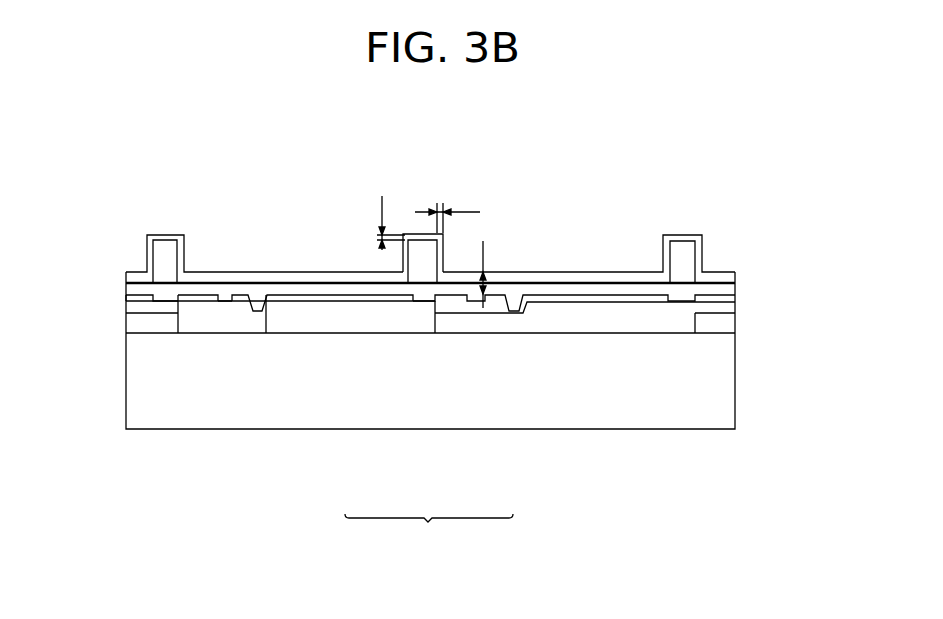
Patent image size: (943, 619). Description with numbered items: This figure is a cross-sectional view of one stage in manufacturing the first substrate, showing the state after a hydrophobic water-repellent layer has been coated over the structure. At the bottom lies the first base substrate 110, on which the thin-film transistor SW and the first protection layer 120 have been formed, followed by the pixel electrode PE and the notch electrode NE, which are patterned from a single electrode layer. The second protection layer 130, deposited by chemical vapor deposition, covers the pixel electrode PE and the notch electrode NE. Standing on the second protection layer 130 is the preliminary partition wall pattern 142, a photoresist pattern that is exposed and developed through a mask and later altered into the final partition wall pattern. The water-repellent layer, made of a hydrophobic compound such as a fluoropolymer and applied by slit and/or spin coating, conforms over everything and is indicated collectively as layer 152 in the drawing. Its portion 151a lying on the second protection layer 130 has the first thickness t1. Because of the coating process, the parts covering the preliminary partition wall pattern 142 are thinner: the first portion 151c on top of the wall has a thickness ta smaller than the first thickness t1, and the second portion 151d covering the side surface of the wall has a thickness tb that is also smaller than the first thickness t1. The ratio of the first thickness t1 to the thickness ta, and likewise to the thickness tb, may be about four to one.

The first base substrate 110 is at (127, 377).
The first protection layer 120 is at (127, 322).
The second protection layer 130 is at (127, 291).
The preliminary partition wall pattern 142 is at (163, 253).
The notch electrode NE is at (185, 297).
The thin-film transistor SW is at (231, 325).
The pixel electrode PE is at (283, 298).
The portion of the water-repellent layer 151a is at (361, 272).
The first portion of the water-repellent layer 151c is at (427, 244).
The second portion of the water-repellent layer 151d is at (438, 254).
The alignment layer 152 is at (429, 534).
The thickness of the first portion ta is at (447, 210).
The thickness of the second portion tb is at (379, 223).
The first thickness t1 is at (496, 274).